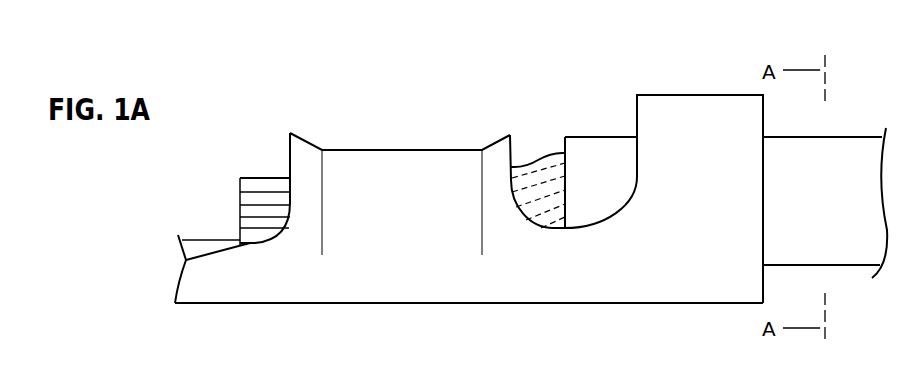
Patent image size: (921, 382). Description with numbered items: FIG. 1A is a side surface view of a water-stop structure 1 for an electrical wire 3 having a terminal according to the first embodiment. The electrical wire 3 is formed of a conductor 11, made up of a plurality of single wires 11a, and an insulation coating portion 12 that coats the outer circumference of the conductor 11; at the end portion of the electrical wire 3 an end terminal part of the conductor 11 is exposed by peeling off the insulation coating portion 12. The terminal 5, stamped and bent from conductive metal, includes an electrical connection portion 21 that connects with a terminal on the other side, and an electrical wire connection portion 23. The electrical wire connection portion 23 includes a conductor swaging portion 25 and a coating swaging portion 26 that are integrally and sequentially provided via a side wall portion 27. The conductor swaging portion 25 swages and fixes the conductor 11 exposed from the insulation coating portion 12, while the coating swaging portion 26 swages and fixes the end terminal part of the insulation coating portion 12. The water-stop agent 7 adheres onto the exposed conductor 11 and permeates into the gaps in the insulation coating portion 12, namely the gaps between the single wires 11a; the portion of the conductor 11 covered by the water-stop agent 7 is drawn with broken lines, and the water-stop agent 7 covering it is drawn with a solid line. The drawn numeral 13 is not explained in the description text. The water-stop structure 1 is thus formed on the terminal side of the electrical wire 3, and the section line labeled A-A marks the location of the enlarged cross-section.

The water-stop structure 1 is at (683, 68).
The electrical wire 3 is at (588, 105).
The terminal 5 is at (375, 308).
The water-stop agent 7 is at (528, 163).
The conductor 11 is at (265, 208).
The insulation coating portion 12 is at (613, 152).
The hardened layer 13 is at (250, 182).
The electrical connection portion 21 is at (250, 307).
The electrical wire connection portion 23 is at (435, 138).
The conductor swaging portion 25 is at (420, 258).
The coating swaging portion 26 is at (708, 233).
The side wall portion 27 is at (538, 237).
The single wires 11a is at (920, 353).